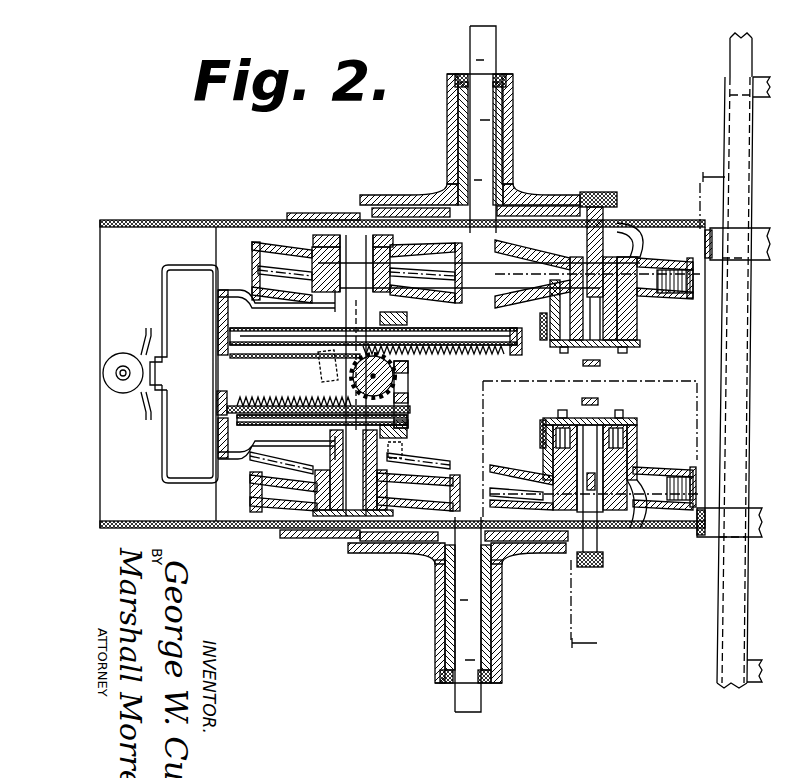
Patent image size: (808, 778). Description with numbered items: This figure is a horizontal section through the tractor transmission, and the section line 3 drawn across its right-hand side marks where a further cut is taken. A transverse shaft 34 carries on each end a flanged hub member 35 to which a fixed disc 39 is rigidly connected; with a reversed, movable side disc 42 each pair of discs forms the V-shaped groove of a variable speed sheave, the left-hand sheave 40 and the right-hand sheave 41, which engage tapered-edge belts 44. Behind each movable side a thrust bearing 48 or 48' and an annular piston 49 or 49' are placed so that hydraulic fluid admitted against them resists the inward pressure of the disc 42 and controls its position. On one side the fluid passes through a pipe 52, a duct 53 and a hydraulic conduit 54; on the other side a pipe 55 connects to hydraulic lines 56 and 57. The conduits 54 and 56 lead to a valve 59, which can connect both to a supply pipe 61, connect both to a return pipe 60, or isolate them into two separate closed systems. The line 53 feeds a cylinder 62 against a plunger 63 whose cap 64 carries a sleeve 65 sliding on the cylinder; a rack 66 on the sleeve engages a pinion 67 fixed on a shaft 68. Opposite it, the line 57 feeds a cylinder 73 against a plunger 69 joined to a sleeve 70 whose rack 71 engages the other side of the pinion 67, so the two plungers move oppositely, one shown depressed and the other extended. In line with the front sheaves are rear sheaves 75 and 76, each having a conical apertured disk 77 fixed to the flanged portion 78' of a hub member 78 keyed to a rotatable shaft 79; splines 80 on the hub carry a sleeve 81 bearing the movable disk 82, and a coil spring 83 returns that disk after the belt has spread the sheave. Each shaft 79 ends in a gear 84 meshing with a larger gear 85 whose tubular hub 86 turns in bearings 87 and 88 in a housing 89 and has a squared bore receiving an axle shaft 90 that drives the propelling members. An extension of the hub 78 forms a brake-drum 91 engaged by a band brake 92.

The section line 3- 3 is at (641, 410).
The shaft 34 is at (355, 375).
The flanged hub member 35 is at (352, 235).
The disc 39 is at (256, 242).
The variable speed sheave 40 is at (299, 538).
The variable speed sheave 41 is at (287, 243).
The movable side disc 42 is at (440, 300).
The belt 44 is at (477, 272).
The thrust bearing 48 is at (399, 312).
The thrust bearing 48' is at (421, 438).
The annular piston 49 is at (313, 364).
The annular piston 49' is at (413, 446).
The pipe 52 is at (250, 448).
The duct 53 is at (218, 426).
The hydraulic conduit 54 is at (190, 478).
The pipe 55 is at (250, 290).
The hydraulic line 56 is at (195, 271).
The hydraulic line 57 is at (218, 323).
The valve 59 is at (125, 392).
The return pipe 60 is at (146, 420).
The pipe 61 is at (145, 336).
The cylinder 62 is at (227, 393).
The plunger 63 is at (286, 399).
The cap 64 is at (408, 426).
The sleeve 65 is at (408, 398).
The rack 66 is at (322, 396).
The pinion 67 is at (408, 366).
The shaft 68 is at (395, 378).
The plunger 69 is at (516, 355).
The sleeve 70 is at (487, 331).
The rack 71 is at (480, 356).
The cylinder 73 is at (252, 350).
The sheave 75 is at (683, 468).
The sheave 76 is at (683, 294).
The conical shaped apertured disk 77 is at (664, 300).
The hub member 78 is at (565, 375).
The flanged portion 78' is at (647, 368).
The rotatable shaft 79 is at (594, 192).
The splines 80 is at (632, 226).
The sleeve 81 is at (600, 363).
The conical shaped apertured disk 82 is at (678, 260).
The coil spring 83 is at (543, 450).
The gear 84 is at (614, 207).
The larger gear 85 is at (564, 206).
The tubular hub portion 86 is at (460, 132).
The bearing 87 is at (430, 198).
The bearing 88 is at (460, 76).
The housing 89 is at (447, 108).
The axle shaft 90 is at (470, 34).
The brake-drum 91 is at (563, 354).
The band type of brake 92 is at (540, 326).